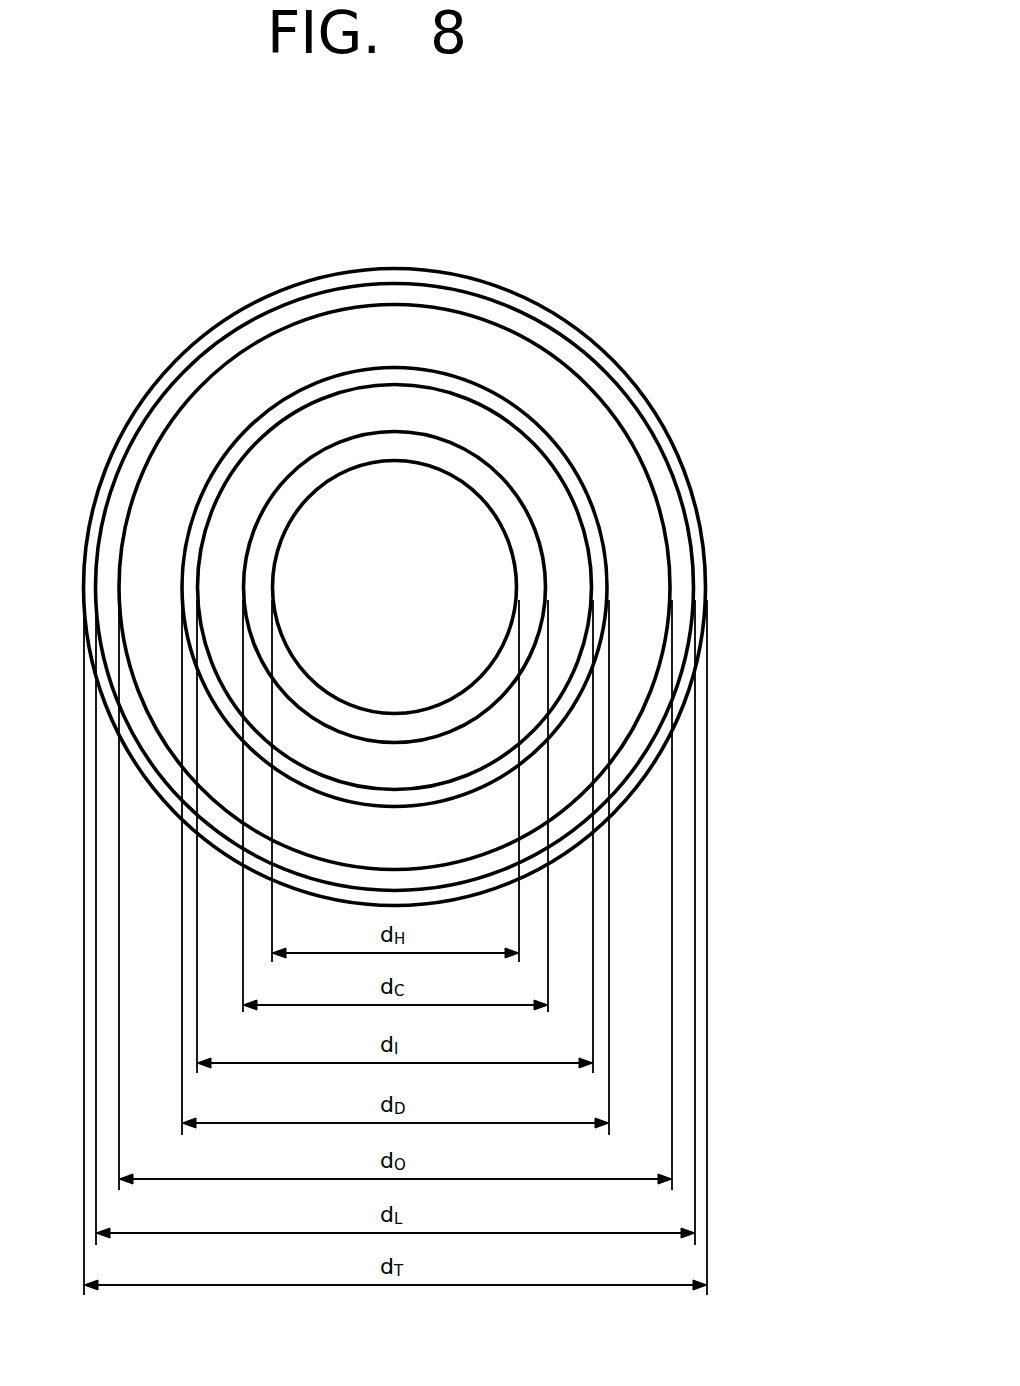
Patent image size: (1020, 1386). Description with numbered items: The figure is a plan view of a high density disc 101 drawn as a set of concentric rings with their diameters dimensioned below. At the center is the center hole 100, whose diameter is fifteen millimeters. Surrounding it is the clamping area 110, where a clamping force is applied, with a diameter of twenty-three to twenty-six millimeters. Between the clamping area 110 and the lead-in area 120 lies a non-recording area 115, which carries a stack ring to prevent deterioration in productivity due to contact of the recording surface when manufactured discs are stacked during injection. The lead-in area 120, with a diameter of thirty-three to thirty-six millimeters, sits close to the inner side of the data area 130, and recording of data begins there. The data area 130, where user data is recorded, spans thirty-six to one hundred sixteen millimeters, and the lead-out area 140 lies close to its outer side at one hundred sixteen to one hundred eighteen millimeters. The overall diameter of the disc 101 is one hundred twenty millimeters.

The center hole 100 is at (345, 464).
The high density disc 101 is at (705, 276).
The clamping area 110 is at (413, 442).
The non-recording area 115 is at (560, 518).
The lead-in area 120 is at (475, 393).
The data area 130 is at (555, 373).
The lead-out area 140 is at (607, 392).